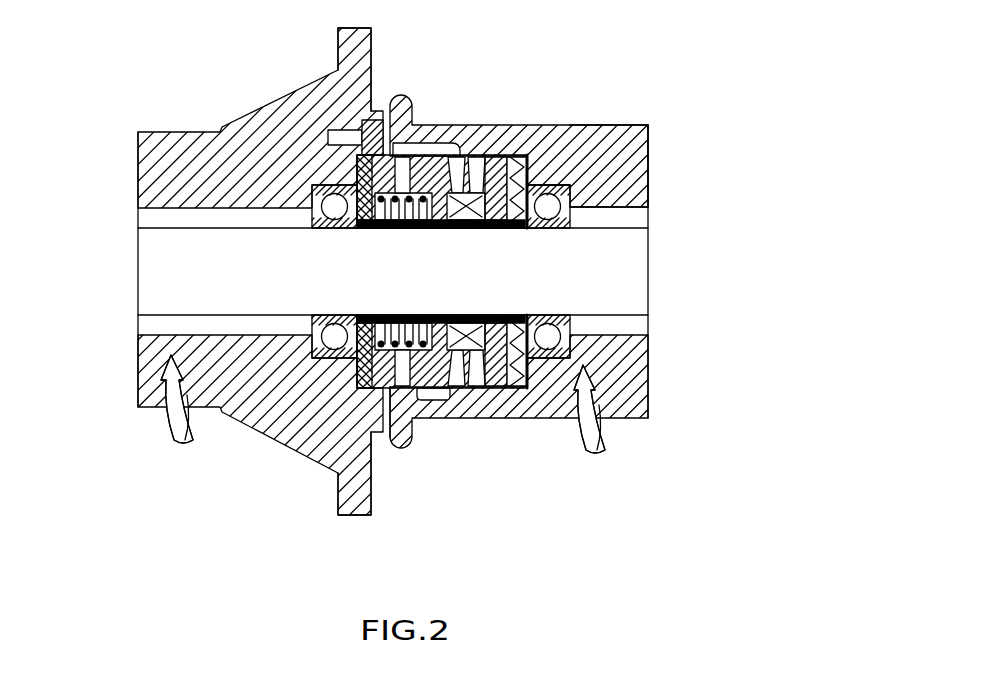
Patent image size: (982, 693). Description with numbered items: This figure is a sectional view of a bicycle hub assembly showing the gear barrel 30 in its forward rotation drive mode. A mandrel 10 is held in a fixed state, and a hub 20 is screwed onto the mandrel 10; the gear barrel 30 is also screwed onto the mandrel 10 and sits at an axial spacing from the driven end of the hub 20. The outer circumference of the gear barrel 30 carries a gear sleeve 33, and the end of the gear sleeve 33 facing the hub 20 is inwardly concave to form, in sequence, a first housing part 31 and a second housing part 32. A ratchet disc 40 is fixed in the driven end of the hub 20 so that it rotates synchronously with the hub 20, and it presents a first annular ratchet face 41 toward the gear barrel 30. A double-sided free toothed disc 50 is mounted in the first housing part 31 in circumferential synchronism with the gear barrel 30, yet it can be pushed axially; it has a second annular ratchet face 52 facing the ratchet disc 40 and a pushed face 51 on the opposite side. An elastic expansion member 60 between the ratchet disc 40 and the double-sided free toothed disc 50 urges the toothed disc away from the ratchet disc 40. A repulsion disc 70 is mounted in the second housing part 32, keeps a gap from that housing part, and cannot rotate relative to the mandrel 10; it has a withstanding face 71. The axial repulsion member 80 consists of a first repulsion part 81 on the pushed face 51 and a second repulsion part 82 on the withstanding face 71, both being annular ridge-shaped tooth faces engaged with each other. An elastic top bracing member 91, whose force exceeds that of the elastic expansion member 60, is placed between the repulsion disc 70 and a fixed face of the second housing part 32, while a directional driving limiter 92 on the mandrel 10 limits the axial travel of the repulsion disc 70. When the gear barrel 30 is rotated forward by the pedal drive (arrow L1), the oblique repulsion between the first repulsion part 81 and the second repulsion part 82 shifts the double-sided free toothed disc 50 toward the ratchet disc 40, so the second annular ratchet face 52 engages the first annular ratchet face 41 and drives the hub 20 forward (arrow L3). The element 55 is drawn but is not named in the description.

The mandrel 10 is at (626, 250).
The hub 20 is at (166, 128).
The gear barrel 30 is at (649, 383).
The first housing part 31 is at (341, 117).
The second housing part 32 is at (543, 162).
The gear sleeve 33 is at (618, 124).
The ratchet disc 40 is at (354, 177).
The first annular ratchet face 41 is at (339, 427).
The double-sided free toothed disc 50 is at (434, 374).
The pushed face 51 is at (451, 313).
The second annular ratchet face 52 is at (370, 230).
The cover plate 55 is at (438, 146).
The elastic expansion member 60 is at (394, 393).
The repulsion disc 70 is at (497, 370).
The withstanding face 71 is at (477, 368).
The axial repulsion member 80 is at (473, 200).
The first repulsion part 81 is at (462, 157).
The second repulsion part 82 is at (476, 157).
The elastic top bracing member 91 is at (514, 372).
The directional driving limiter 92 is at (501, 232).
The arrow L1 is at (631, 352).
The arrow L3 is at (148, 363).